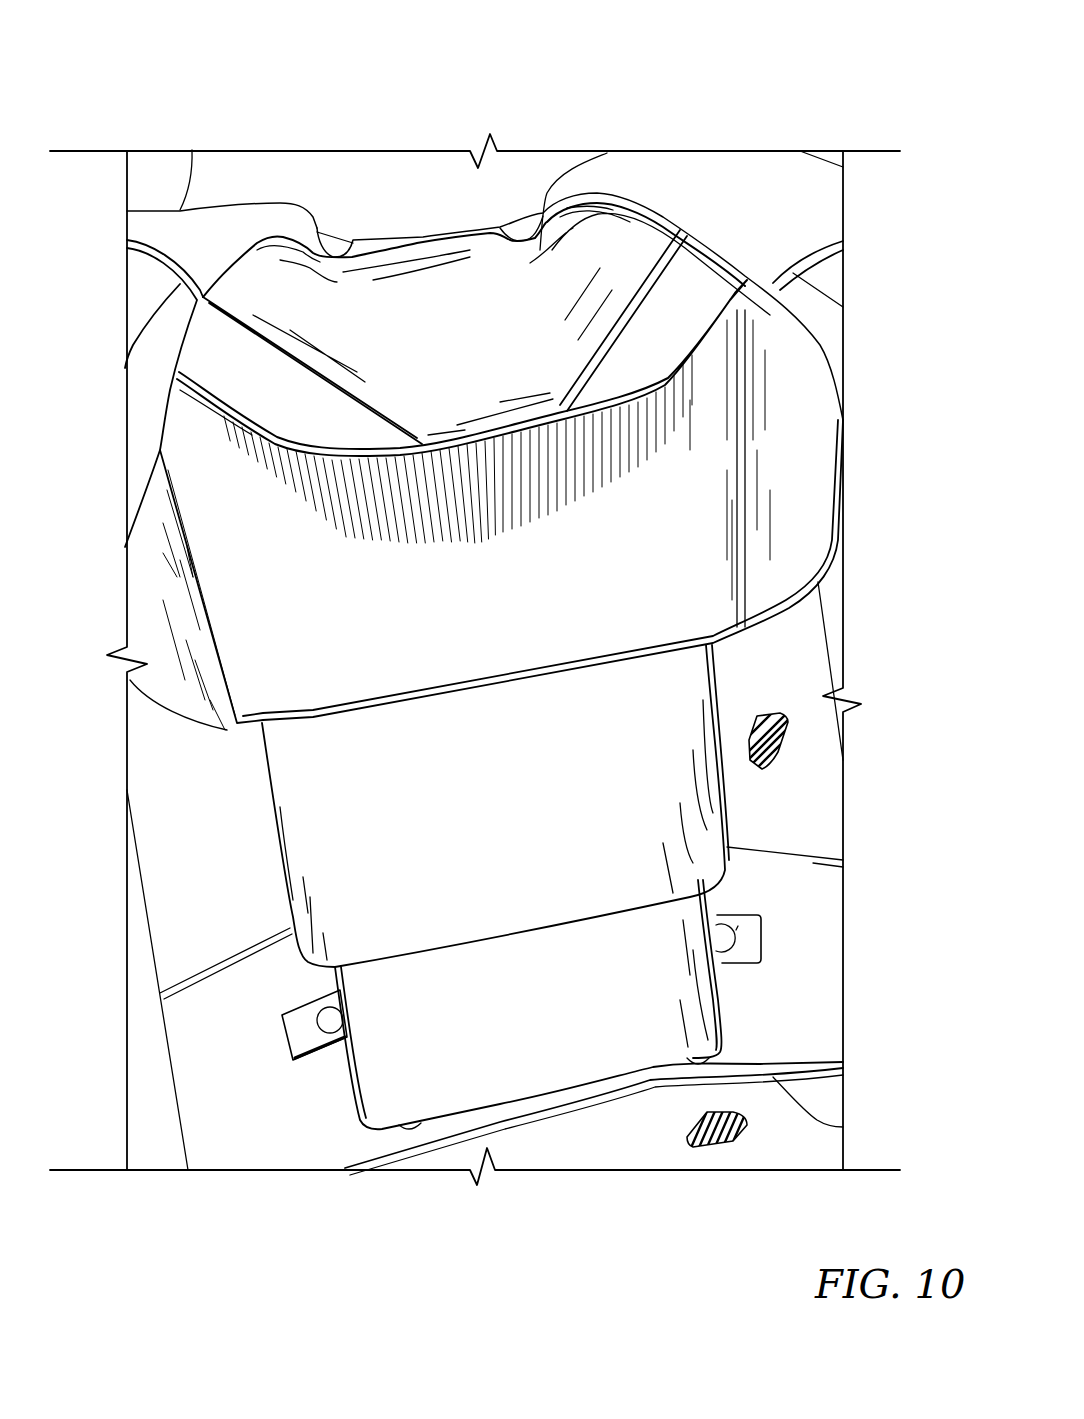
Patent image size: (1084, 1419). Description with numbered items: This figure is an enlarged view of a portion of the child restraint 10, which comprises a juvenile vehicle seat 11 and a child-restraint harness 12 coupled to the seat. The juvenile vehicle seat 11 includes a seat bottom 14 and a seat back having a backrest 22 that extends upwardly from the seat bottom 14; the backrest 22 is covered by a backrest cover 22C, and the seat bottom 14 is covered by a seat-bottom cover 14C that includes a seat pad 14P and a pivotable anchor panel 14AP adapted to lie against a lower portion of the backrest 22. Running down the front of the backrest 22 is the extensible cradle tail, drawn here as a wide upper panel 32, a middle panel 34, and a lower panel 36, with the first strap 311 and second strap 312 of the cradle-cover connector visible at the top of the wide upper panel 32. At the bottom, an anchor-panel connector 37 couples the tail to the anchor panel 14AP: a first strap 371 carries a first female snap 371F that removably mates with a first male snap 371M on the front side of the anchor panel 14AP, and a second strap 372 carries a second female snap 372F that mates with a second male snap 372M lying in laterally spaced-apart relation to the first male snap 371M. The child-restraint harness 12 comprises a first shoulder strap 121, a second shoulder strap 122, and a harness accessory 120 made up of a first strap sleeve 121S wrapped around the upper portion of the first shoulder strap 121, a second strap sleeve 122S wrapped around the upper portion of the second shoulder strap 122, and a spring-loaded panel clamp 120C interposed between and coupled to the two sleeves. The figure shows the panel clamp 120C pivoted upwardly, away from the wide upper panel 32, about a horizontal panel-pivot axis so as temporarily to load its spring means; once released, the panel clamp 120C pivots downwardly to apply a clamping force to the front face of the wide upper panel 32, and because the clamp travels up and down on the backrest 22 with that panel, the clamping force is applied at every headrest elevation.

The child restraint 10 is at (277, 148).
The juvenile vehicle seat 11 is at (192, 148).
The child-restraint harness 12 is at (758, 196).
The seat bottom 14 is at (707, 1147).
The seat pad 14P is at (653, 1155).
The seat-bottom cover 14C is at (803, 1120).
The anchor panel 14AP is at (815, 1052).
The backrest 22 is at (784, 757).
The backrest cover 22C is at (798, 680).
The wide upper panel 32 is at (467, 641).
The middle panel 34 is at (507, 836).
The lower panel 36 is at (540, 1041).
The anchor-panel connector 37 is at (595, 1100).
The first strap 371 is at (675, 946).
The first female snap 371F is at (727, 945).
The first male snap 371M is at (693, 1045).
The second strap 372 is at (375, 1015).
The second female snap 372F is at (333, 993).
The second male snap 372M is at (405, 1142).
The harness accessory 120 is at (607, 100).
The panel clamp 120C is at (420, 287).
The first shoulder strap 121 is at (830, 283).
The first strap sleeve 121S is at (680, 186).
The second shoulder strap 122 is at (157, 332).
The second strap sleeve 122S is at (240, 222).
The first strap 311 is at (222, 183).
The second strap 312 is at (633, 157).